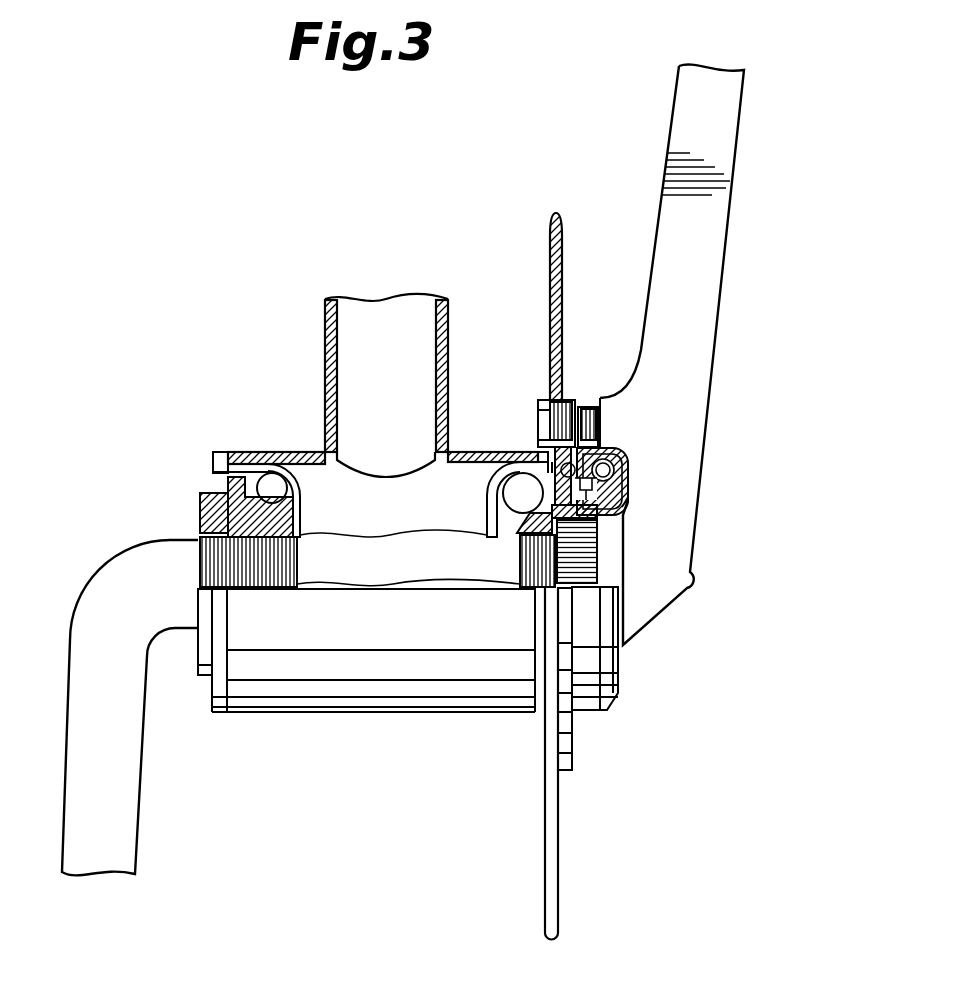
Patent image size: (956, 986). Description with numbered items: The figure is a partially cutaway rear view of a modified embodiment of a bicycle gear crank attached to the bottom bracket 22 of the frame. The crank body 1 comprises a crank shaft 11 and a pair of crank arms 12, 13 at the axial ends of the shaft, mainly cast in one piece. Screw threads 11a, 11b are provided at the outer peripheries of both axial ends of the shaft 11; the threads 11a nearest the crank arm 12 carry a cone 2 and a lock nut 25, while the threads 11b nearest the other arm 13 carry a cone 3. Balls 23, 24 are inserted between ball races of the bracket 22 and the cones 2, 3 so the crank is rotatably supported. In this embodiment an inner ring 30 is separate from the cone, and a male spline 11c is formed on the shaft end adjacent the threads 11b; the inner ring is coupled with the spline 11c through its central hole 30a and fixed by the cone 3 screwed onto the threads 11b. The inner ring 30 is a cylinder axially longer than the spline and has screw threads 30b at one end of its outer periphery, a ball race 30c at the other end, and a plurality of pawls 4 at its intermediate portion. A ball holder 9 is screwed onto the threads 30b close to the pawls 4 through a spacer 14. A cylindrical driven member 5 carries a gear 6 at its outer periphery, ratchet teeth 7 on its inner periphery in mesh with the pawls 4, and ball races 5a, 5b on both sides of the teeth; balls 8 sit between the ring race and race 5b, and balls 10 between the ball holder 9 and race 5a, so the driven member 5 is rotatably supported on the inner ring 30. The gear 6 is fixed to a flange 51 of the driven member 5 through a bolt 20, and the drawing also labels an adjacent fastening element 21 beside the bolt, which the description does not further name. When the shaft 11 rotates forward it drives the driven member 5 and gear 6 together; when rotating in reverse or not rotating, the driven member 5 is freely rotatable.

The crank body 1 is at (699, 487).
The cone 2 is at (213, 493).
The cone 3 is at (553, 480).
The pawls 4 is at (622, 507).
The driven member 5 is at (590, 447).
The ball race 5a is at (543, 400).
The ball race 5b is at (603, 458).
The gear 6 is at (563, 253).
The ratchet teeth 7 is at (615, 448).
The balls 8 is at (622, 468).
The ball holder 9 is at (540, 458).
The balls 10 is at (546, 466).
The crank shaft 11 is at (402, 570).
The screw threads 11a is at (268, 583).
The screw threads 11b is at (527, 585).
The male spline 11c is at (580, 563).
The crank arm 12 is at (122, 812).
The crank arm 13 is at (688, 363).
The spacer 14 is at (597, 512).
The bolt 20 is at (560, 405).
The threaded block 21 is at (593, 407).
The bottom bracket 22 is at (303, 452).
The balls 23 is at (270, 483).
The balls 24 is at (495, 460).
The lock nut 25 is at (200, 515).
The inner ring 30 is at (592, 518).
The hole 30a is at (588, 524).
The screw threads 30b is at (585, 530).
The ball race 30c is at (613, 473).
The flange 51 is at (568, 398).